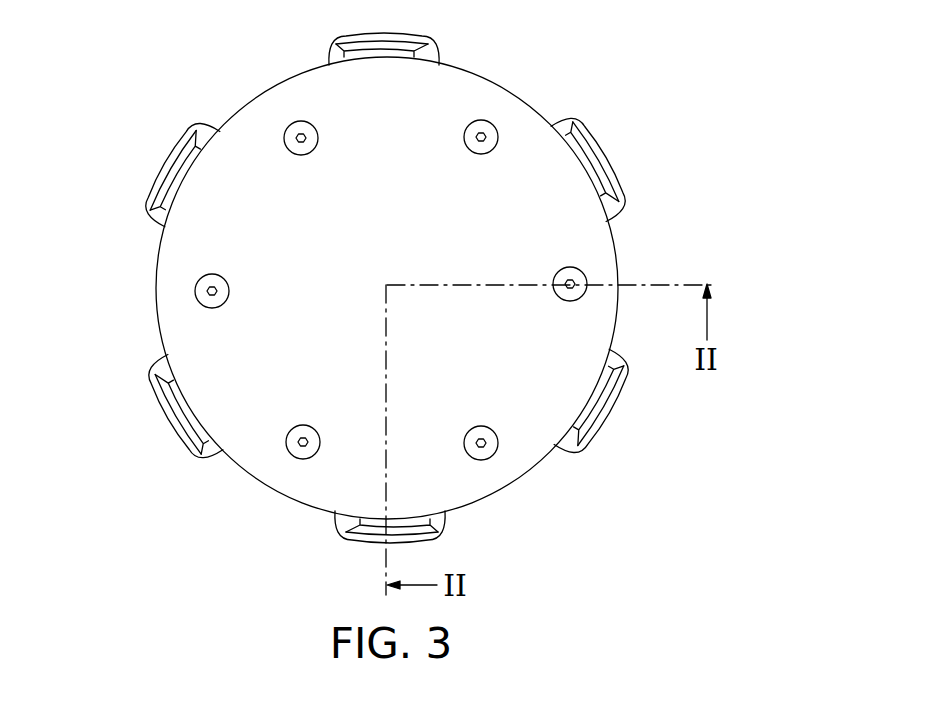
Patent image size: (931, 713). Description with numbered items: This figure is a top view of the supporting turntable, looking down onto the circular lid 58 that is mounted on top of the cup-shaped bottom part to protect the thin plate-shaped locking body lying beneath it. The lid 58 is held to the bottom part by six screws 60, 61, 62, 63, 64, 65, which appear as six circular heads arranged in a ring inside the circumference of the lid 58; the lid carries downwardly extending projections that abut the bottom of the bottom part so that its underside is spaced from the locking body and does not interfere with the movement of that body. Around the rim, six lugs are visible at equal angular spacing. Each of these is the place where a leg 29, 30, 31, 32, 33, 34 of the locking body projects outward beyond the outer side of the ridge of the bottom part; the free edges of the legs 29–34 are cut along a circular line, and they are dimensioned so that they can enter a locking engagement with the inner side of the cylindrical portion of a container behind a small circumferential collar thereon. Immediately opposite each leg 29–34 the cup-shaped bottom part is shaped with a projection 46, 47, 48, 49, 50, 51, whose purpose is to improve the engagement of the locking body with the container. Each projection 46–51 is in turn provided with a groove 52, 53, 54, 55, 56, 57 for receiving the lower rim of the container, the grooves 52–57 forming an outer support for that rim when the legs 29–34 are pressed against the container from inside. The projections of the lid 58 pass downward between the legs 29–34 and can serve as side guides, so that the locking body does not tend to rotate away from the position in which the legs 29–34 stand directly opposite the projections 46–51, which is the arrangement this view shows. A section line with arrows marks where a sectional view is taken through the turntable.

The leg 29 is at (410, 40).
The leg 30 is at (600, 166).
The leg 31 is at (608, 418).
The leg 32 is at (340, 532).
The leg 33 is at (173, 412).
The leg 34 is at (180, 182).
The projection 46 is at (443, 44).
The projection 47 is at (622, 190).
The projection 48 is at (614, 397).
The projection 49 is at (372, 540).
The projection 50 is at (185, 430).
The projection 51 is at (178, 148).
The groove 52 is at (345, 50).
The groove 53 is at (590, 134).
The groove 54 is at (618, 364).
The groove 55 is at (442, 527).
The groove 56 is at (207, 450).
The groove 57 is at (163, 205).
The circular lid 58 is at (520, 112).
The screw 60 is at (583, 275).
The screw 61 is at (497, 447).
The screw 62 is at (312, 456).
The screw 63 is at (196, 294).
The screw 64 is at (290, 126).
The screw 65 is at (489, 122).